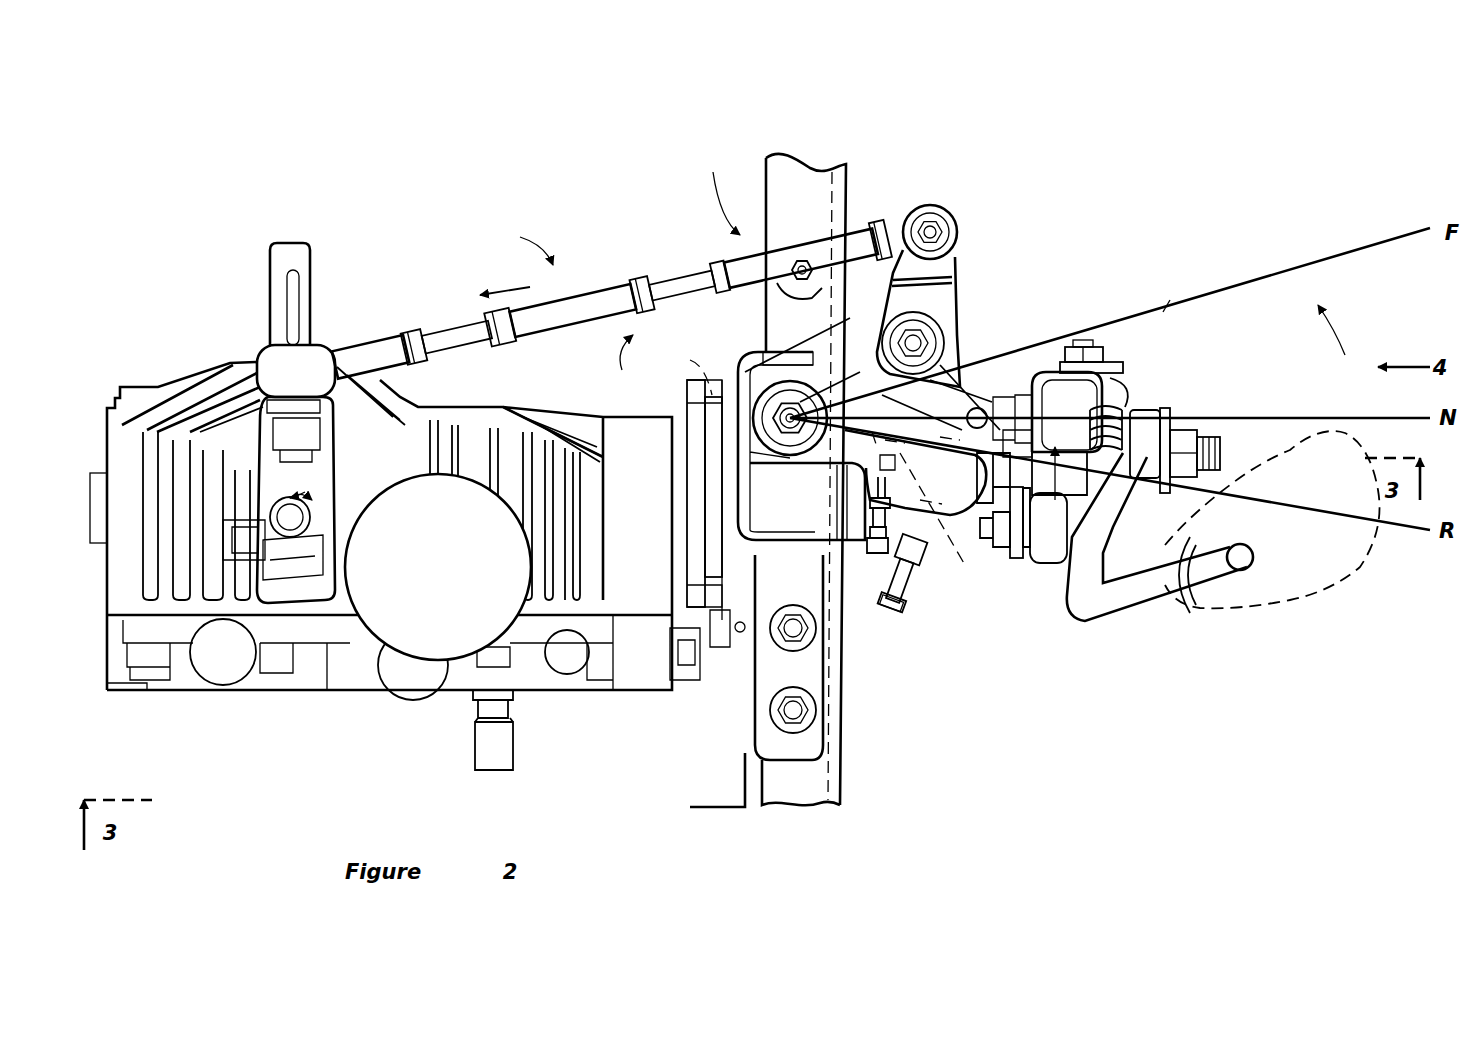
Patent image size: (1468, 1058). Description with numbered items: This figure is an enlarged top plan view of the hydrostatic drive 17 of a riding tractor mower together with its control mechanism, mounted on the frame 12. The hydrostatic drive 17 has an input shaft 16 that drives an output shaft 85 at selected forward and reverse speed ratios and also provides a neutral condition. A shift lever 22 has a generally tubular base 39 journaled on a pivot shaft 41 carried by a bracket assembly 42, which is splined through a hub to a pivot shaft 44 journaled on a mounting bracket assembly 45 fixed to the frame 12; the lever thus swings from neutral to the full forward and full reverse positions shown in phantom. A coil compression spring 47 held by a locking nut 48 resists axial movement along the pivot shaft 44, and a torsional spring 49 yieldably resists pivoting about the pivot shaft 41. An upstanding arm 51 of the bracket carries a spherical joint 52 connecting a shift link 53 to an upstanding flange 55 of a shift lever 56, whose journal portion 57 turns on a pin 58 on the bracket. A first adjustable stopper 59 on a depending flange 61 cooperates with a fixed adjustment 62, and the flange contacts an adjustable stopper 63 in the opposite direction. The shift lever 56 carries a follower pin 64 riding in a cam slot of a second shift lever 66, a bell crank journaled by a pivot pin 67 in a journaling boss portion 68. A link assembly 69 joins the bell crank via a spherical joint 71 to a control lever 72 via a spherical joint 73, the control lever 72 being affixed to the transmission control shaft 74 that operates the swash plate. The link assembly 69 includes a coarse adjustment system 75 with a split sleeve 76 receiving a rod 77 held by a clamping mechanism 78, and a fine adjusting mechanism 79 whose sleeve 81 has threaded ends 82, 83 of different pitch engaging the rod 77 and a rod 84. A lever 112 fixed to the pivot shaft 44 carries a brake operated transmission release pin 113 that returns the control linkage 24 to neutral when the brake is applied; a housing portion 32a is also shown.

The frame 12 is at (790, 175).
The input shaft 16 is at (300, 258).
The hydrostatic drive 17 is at (100, 593).
The shift lever 22 is at (1137, 600).
The control linkage 24 is at (1140, 228).
The engine housing portion 32a is at (600, 422).
The tubular base 39 is at (1151, 412).
The pivot shaft 41 is at (1163, 312).
The bracket assembly 42 is at (1088, 340).
The pivot shaft 44 is at (1220, 458).
The mounting bracket assembly 45 is at (935, 360).
The coil compression spring 47 is at (1163, 413).
The locking nut 48 is at (1187, 473).
The torsional spring 49 is at (1160, 413).
The upstanding arm 51 is at (1022, 550).
The spherical joint 52 is at (983, 540).
The shift link 53 is at (1123, 407).
The upstanding flange 55 is at (1088, 428).
The shift lever 56 is at (855, 478).
The journal portion 57 is at (760, 350).
The pin 58 is at (795, 430).
The first adjustable stopper 59 is at (930, 537).
The depending flange 61 is at (890, 523).
The fixed adjustment 62 is at (915, 497).
The adjustable stopper 63 is at (903, 617).
The follower pin 64 is at (1050, 362).
The second shift lever 66 is at (962, 298).
The pivot pin 67 is at (880, 322).
The journaling boss portion 68 is at (932, 308).
The link assembly 69 is at (638, 360).
The spherical joint 71 is at (958, 240).
The control lever 72 is at (290, 445).
The spherical joint 73 is at (258, 475).
The transmission control shaft 74 is at (297, 520).
The coarse adjustment system 75 is at (719, 191).
The split sleeve 76 is at (882, 235).
The rod 77 is at (672, 265).
The clamping mechanism 78 is at (805, 262).
The fine adjusting mechanism 79 is at (596, 310).
The sleeve 81 is at (608, 298).
The threaded end 82 is at (500, 335).
The threaded end 83 is at (640, 283).
The rod 84 is at (447, 348).
The output shaft 85 is at (500, 743).
The lever 112 is at (693, 480).
The brake operated transmission release pin 113 is at (700, 547).